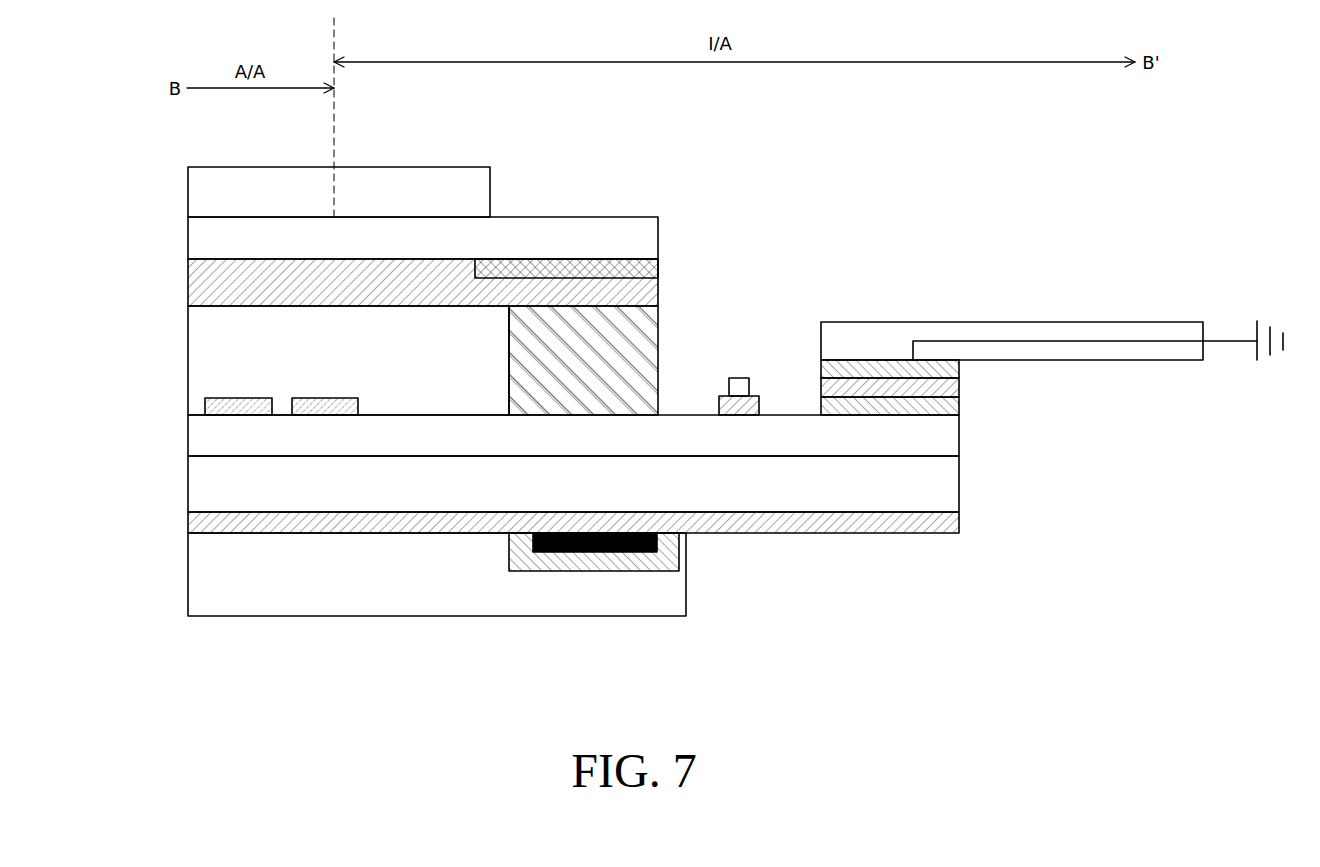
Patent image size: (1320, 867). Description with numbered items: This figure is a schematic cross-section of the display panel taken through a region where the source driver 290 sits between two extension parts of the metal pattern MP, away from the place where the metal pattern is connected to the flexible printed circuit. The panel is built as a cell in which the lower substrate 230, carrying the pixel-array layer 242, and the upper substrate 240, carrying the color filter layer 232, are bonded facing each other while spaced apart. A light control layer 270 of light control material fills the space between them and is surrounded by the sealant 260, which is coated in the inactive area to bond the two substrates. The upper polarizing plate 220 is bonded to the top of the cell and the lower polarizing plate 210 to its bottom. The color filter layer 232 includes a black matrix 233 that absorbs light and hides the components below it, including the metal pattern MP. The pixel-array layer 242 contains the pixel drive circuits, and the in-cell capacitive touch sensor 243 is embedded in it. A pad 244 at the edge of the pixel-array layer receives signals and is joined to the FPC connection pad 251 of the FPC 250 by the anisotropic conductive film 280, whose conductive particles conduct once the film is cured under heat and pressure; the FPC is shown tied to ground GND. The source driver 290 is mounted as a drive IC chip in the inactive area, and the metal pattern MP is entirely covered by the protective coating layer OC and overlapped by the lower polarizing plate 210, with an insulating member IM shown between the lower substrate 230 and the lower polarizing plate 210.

The lower polarizing plate 210 is at (215, 573).
The upper polarizing plate 220 is at (215, 191).
The lower substrate 230 is at (215, 491).
The color filter layer 232 is at (215, 287).
The black matrix 233 is at (614, 267).
The upper substrate 240 is at (215, 243).
The pixel-array layer 242 is at (196, 441).
The in-cell capacitive touch sensor 243 is at (215, 401).
The pad 244 is at (930, 403).
The FPC 250 is at (1188, 330).
The FPC connection pad 251 is at (943, 368).
The sealant 260 is at (624, 326).
The light control layer 270 is at (215, 367).
The anisotropic conductive film 280 is at (757, 413).
The source driver 290 is at (738, 385).
The insulating member IM is at (215, 528).
The metal pattern MP is at (610, 552).
The protective coating layer OC is at (653, 562).
The ground GND is at (1246, 355).